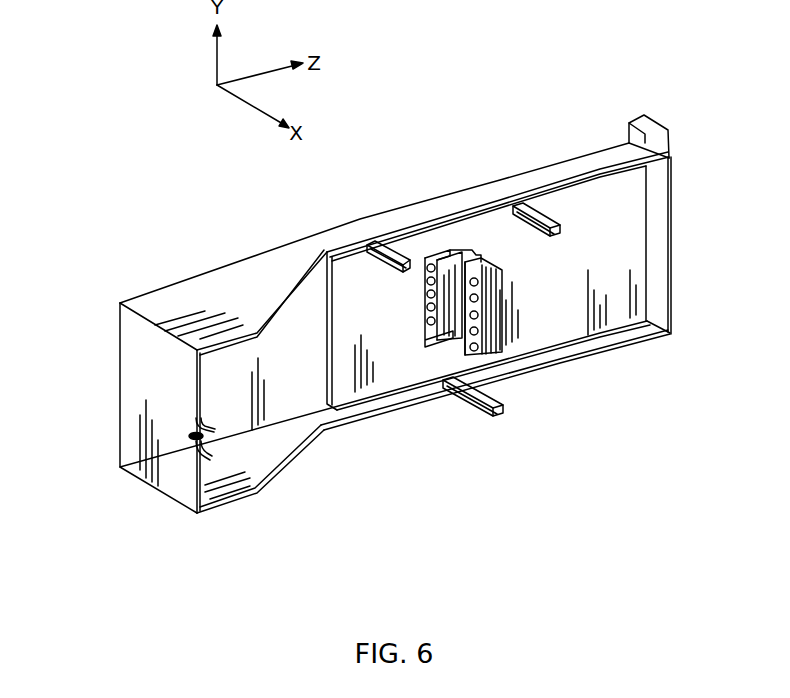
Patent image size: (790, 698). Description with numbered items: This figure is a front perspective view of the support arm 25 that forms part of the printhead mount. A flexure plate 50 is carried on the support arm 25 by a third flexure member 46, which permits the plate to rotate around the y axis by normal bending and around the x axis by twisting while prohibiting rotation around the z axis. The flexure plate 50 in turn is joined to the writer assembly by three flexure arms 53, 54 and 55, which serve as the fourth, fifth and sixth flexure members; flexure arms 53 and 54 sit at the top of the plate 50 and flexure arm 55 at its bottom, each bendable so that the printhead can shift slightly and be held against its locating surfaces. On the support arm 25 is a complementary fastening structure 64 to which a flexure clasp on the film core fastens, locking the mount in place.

The support arm 25 is at (124, 476).
The third flexure member 46 is at (466, 336).
The flexure plate 50 is at (538, 300).
The flexure arm 53 is at (530, 207).
The flexure arm 54 is at (408, 240).
The flexure arm 55 is at (510, 410).
The complementary fastening structure 64 is at (198, 452).